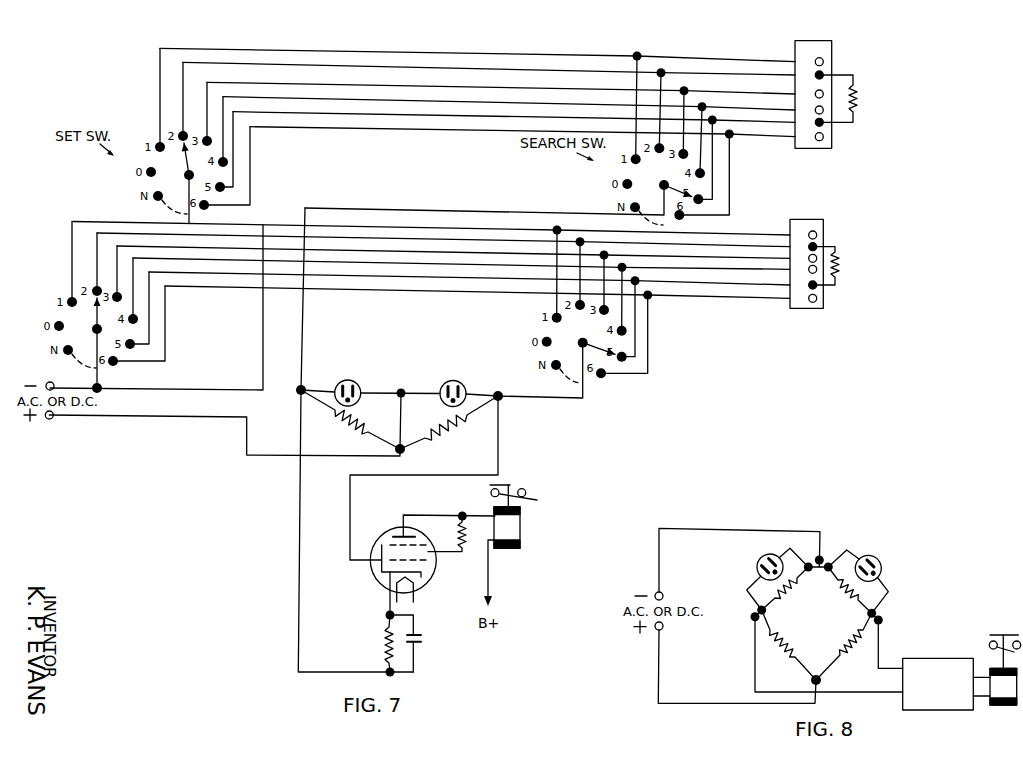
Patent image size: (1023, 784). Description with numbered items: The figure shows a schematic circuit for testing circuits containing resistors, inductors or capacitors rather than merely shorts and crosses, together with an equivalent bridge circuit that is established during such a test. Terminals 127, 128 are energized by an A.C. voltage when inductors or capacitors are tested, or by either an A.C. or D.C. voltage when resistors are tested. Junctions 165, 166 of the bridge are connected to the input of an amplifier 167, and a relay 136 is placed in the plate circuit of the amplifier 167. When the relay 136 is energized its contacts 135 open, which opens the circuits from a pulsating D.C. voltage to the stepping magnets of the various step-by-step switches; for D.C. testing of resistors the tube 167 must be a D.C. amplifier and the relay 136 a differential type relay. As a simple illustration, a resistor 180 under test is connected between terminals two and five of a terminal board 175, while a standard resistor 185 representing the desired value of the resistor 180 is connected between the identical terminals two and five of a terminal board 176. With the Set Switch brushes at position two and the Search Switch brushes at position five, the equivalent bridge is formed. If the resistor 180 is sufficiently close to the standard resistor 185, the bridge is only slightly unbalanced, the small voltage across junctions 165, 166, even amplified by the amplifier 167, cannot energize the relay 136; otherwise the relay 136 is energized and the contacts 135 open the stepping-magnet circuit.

In FIG. 7, the terminal 127 is at (51, 421).
In FIG. 7, the terminal 128 is at (47, 382).
In FIG. 7, the contacts 135 is at (527, 496).
In FIG. 8, the contacts 135 is at (989, 644).
In FIG. 7, the relay 136 is at (523, 523).
In FIG. 8, the relay 136 is at (988, 690).
In FIG. 7, the junction 165 is at (304, 386).
In FIG. 8, the junction 165 is at (753, 618).
In FIG. 7, the junction 166 is at (503, 378).
In FIG. 8, the junction 166 is at (879, 621).
In FIG. 7, the amplifier 167 is at (392, 536).
In FIG. 8, the amplifier 167 is at (932, 707).
In FIG. 7, the terminal board 175 is at (813, 45).
In FIG. 7, the terminal board 176 is at (813, 221).
In FIG. 7, the resistor 180 is at (857, 90).
In FIG. 8, the resistor 180 is at (789, 645).
In FIG. 7, the standard resistor 185 is at (839, 257).
In FIG. 8, the standard resistor 185 is at (844, 646).